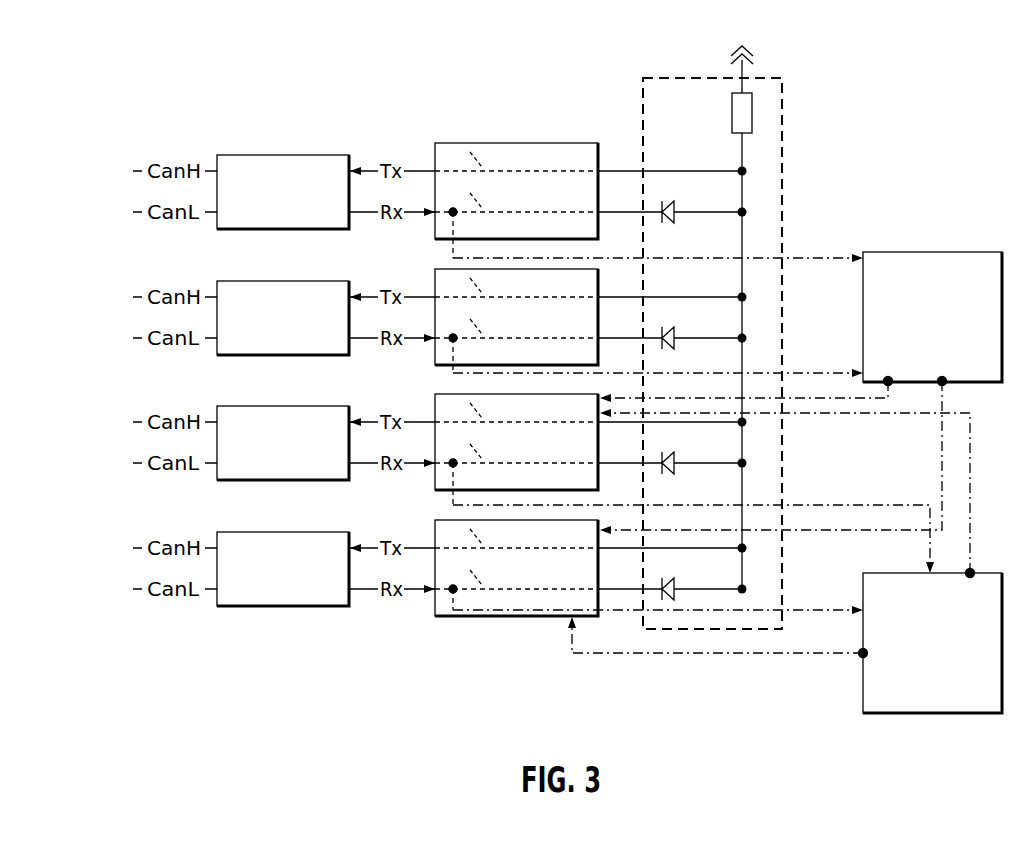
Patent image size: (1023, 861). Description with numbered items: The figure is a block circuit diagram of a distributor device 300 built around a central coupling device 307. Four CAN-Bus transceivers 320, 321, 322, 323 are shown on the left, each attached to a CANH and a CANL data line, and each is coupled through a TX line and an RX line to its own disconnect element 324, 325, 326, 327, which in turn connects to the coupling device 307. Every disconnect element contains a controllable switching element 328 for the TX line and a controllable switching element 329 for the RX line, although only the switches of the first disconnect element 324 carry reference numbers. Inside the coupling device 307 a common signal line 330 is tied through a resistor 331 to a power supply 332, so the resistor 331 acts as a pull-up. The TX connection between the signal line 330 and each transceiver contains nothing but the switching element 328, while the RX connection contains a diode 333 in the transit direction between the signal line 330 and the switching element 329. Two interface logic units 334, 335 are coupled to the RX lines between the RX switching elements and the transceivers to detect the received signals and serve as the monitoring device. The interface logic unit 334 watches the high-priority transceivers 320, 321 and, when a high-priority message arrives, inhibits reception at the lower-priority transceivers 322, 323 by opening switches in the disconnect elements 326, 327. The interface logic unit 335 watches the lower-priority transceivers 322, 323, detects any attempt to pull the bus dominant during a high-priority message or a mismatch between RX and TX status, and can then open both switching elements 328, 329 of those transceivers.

The distributor device 300 is at (203, 68).
The central coupling device 307 is at (782, 145).
The transceiver 320 is at (270, 155).
The transceiver 321 is at (270, 281).
The transceiver 322 is at (270, 406).
The transceiver 323 is at (270, 532).
The disconnect element 324 is at (476, 203).
The disconnect element 325 is at (435, 362).
The disconnect element 326 is at (435, 488).
The disconnect element 327 is at (435, 615).
The controllable switching element 328 is at (485, 168).
The controllable switching element 329 is at (485, 205).
The signal line 330 is at (746, 194).
The resistor 331 is at (753, 113).
The power supply 332 is at (752, 30).
The diode 333 is at (671, 195).
The interface logic unit 334 is at (918, 252).
The interface logic unit 335 is at (920, 573).